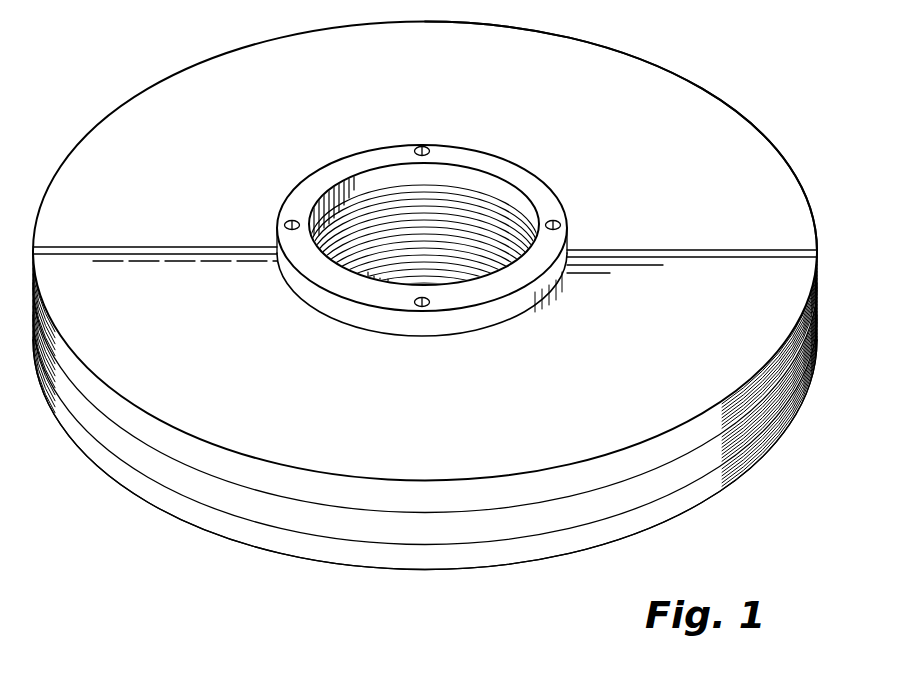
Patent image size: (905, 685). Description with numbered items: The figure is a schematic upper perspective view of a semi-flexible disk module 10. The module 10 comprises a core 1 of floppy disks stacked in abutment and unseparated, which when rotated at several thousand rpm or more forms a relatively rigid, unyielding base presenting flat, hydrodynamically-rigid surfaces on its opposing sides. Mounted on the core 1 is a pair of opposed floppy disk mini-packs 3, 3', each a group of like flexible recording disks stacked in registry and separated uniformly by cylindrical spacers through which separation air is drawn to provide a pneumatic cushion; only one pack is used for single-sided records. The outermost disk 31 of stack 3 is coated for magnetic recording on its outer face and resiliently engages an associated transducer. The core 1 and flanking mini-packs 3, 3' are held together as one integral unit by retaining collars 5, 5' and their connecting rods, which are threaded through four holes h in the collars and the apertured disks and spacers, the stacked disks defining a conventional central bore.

The disk module 10 is at (705, 78).
The outermost recording disk 31 is at (718, 128).
The mini-pack 3 is at (425, 383).
The core 1 is at (438, 539).
The mini-pack 3' is at (425, 465).
The collar 5 is at (448, 240).
The collar 5' is at (424, 270).
The holes h is at (424, 149).